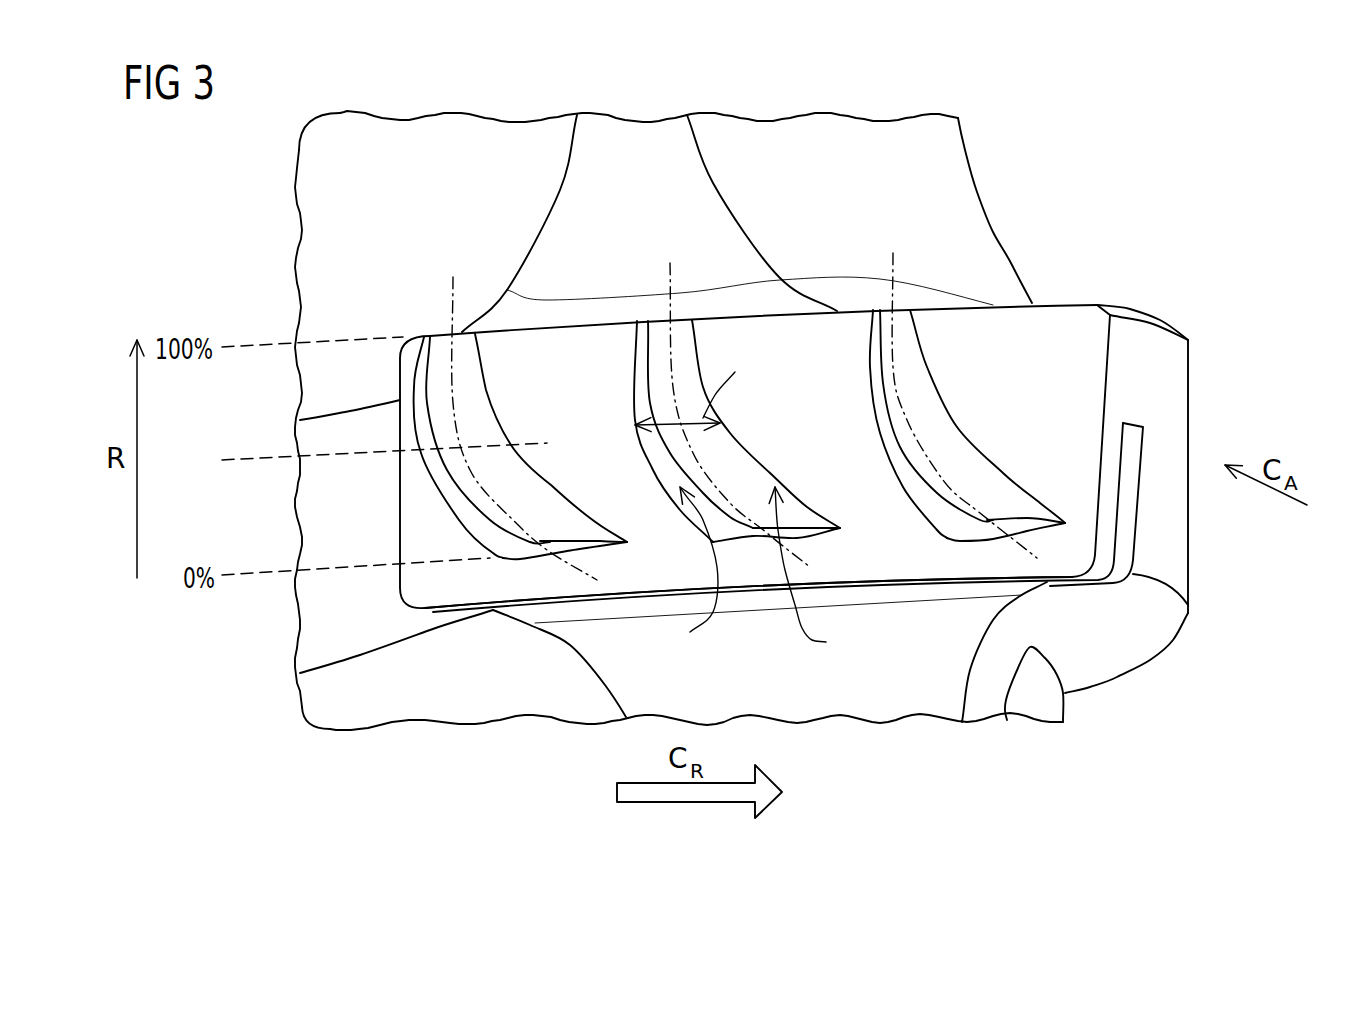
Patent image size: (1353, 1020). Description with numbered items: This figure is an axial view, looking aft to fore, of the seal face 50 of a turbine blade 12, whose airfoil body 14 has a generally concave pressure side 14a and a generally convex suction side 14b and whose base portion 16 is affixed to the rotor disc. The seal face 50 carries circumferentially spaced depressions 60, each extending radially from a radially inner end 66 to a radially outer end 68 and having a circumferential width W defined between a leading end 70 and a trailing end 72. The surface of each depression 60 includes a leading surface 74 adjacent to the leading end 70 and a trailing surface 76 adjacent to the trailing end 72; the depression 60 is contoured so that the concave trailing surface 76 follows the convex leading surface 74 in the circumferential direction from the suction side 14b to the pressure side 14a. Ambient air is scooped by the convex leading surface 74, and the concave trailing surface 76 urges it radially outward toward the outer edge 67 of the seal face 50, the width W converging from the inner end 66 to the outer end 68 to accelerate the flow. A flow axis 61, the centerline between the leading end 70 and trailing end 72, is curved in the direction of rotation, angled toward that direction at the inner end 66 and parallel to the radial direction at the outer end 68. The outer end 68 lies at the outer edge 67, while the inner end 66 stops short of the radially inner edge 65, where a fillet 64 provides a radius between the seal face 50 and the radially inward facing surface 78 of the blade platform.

The turbine blade 12 is at (1080, 135).
The airfoil body 14 is at (727, 223).
The pressure side 14a is at (560, 188).
The suction side 14b is at (740, 225).
The base portion 16 is at (1200, 388).
The seal face 50 is at (1009, 362).
The depression 60 is at (739, 408).
The flow axis 61 is at (937, 473).
The fillet 64 is at (600, 597).
The radially inner edge 65 is at (878, 583).
The radially inner end 66 is at (807, 540).
The radially outer edge 67 is at (945, 306).
The radially outer end 68 is at (657, 323).
The leading end 70 is at (757, 460).
The trailing end 72 is at (650, 482).
The leading surface 74 is at (813, 573).
The trailing surface 76 is at (687, 573).
The radially inward facing surface 78 is at (757, 593).